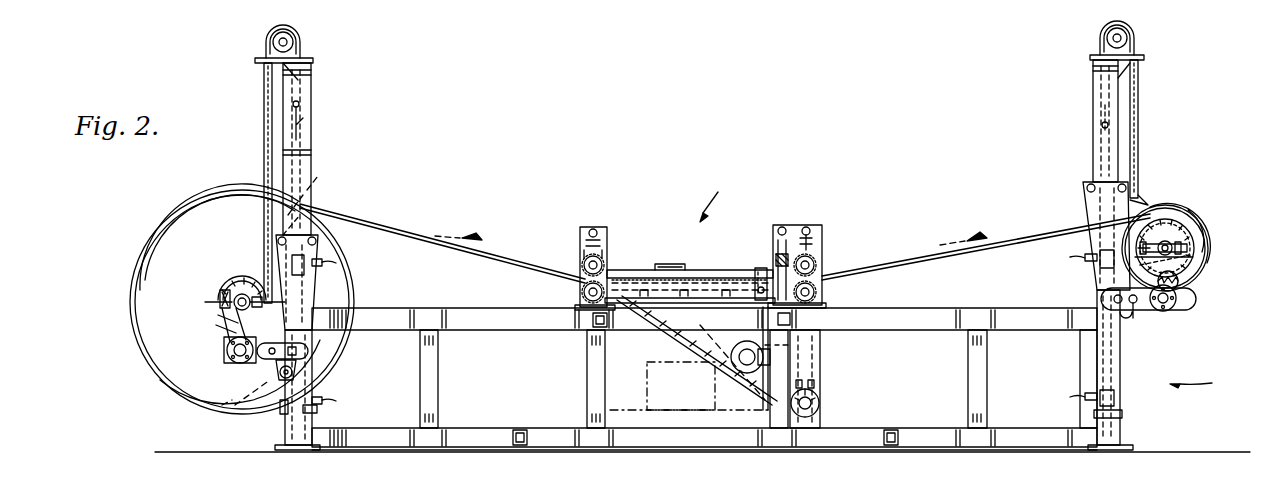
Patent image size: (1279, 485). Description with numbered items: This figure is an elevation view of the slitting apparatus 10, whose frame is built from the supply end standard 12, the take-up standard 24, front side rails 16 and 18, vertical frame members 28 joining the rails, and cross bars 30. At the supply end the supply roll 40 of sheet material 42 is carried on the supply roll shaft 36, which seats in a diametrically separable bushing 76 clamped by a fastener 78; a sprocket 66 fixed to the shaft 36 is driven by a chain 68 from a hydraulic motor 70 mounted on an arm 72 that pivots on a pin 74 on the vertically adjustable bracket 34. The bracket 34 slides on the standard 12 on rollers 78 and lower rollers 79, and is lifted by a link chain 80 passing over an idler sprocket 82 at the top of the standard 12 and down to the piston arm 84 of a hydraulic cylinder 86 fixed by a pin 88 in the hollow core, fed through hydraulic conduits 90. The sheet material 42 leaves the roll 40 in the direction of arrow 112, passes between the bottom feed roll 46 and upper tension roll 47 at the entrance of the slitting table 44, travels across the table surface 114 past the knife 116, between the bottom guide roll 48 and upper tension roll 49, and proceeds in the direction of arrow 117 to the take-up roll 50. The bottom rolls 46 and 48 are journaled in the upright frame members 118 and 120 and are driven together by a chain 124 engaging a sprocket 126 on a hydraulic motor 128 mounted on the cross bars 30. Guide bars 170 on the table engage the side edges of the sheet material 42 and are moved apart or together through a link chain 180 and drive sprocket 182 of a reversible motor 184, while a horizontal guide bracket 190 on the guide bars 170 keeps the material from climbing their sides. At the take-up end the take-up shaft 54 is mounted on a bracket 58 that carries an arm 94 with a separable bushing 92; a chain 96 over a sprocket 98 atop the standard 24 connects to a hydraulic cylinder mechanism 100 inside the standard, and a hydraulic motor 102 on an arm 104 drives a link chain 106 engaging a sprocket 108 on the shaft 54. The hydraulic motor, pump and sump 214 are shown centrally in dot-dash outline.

The slitting apparatus 10 is at (1202, 384).
The supply end standard 12 is at (311, 135).
The front side rail 16 is at (908, 315).
The front side rail 18 is at (930, 428).
The take-up standard 24 is at (1093, 94).
The vertical frame member 28 is at (438, 350).
The cross bar 30 is at (518, 430).
The vertically adjustable bracket 34 is at (322, 243).
The supply roll shaft 36 is at (238, 282).
The supply roll 40 is at (130, 292).
The sheet material 42 is at (505, 252).
The slitting table 44 is at (707, 198).
The bottom feed roll 46 is at (600, 283).
The upper tension roll 47 is at (598, 258).
The bottom guide roll 48 is at (815, 272).
The upper tension roll 49 is at (812, 252).
The take-up roll 50 is at (1208, 242).
The take-up shaft 54 is at (1190, 230).
The take-up bracket 58 is at (1083, 196).
The sprocket 66 is at (248, 278).
The chain 68 is at (222, 322).
The hydraulic motor 70 is at (227, 360).
The arm 72 is at (280, 376).
The pin 74 is at (300, 350).
The separable bushing 76 is at (220, 292).
The rollers 78 is at (322, 196).
The rollers 79 is at (210, 429).
The link chain 80 is at (264, 133).
The idler sprocket 82 is at (306, 37).
The piston arm 84 is at (311, 118).
The hydraulic cylinder 86 is at (312, 377).
The pin 88 is at (282, 414).
The hydraulic conduits 90 is at (336, 263).
The separable bushing 92 is at (1170, 243).
The arm 94 is at (1200, 266).
The chain 96 is at (1138, 108).
The sprocket 98 is at (1100, 36).
The hydraulic cylinder mechanism 100 is at (1100, 361).
The hydraulic motor 102 is at (1168, 312).
The arm 104 is at (1188, 299).
The link chain 106 is at (1178, 280).
The sprocket 108 is at (1162, 222).
The feed direction arrow 112 is at (455, 230).
The table surface 114 is at (714, 280).
The knife 116 is at (762, 268).
The exit direction arrow 117 is at (938, 238).
The upright frame member 118 is at (580, 292).
The upright frame member 120 is at (817, 293).
The chain 124 is at (665, 330).
The sprocket 126 is at (820, 390).
The hydraulic motor 128 is at (819, 405).
The guide bar 170 is at (698, 270).
The link chain 180 is at (712, 345).
The drive sprocket 182 is at (790, 347).
The motor 184 is at (742, 370).
The horizontal guide bracket 190 is at (668, 264).
The hydraulic motor, pump and sump 214 is at (692, 388).